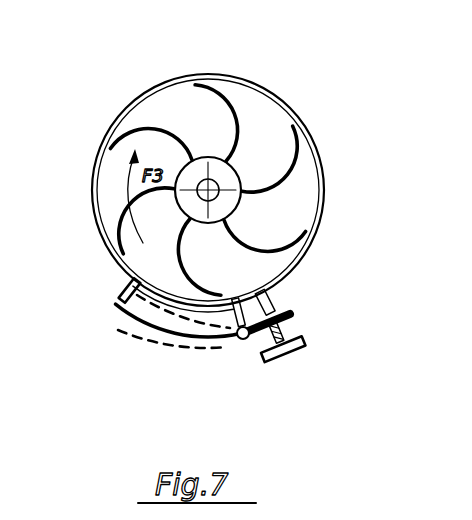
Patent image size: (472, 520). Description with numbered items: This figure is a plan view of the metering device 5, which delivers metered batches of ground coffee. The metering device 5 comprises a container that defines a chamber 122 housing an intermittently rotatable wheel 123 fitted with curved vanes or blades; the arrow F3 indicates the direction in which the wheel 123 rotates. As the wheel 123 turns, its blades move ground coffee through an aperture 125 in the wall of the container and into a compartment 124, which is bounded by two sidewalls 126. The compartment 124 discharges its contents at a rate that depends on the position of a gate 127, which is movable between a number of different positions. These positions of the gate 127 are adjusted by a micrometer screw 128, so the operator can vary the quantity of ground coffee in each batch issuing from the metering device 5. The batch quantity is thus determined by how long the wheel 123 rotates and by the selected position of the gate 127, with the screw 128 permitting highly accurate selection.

The metering device 5 is at (234, 70).
The chamber 122 is at (295, 182).
The intermittently rotatable wheel 123 is at (146, 131).
The compartment 124 is at (190, 310).
The aperture 125 is at (268, 293).
The sidewalls 126 is at (125, 287).
The gate 127 is at (122, 312).
The micrometer screw 128 is at (262, 348).